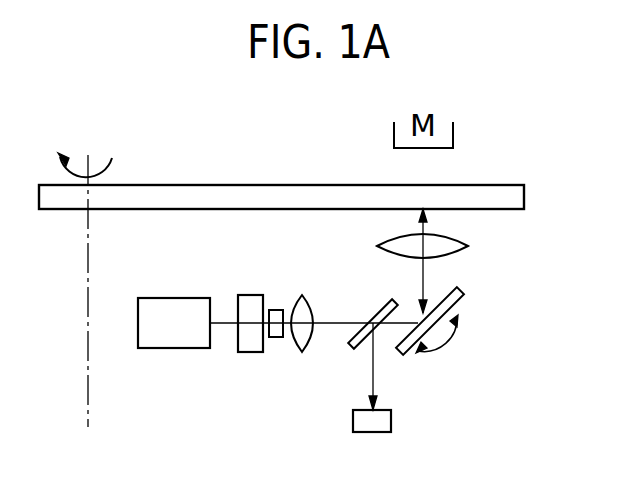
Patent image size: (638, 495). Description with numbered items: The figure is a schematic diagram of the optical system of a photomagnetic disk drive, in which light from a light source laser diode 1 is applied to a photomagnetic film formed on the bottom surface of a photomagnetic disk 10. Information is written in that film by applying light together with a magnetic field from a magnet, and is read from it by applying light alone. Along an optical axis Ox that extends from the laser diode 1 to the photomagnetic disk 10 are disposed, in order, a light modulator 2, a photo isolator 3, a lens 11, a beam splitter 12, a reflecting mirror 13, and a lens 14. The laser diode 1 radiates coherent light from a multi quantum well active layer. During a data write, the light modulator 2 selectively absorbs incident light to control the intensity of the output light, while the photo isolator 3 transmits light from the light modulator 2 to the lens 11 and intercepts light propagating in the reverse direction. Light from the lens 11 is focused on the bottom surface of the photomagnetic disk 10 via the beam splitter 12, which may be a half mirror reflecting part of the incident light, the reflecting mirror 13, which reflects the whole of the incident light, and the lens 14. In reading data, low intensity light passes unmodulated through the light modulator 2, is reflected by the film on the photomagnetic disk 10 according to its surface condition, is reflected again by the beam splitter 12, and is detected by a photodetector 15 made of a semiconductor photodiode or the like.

The laser diode 1 is at (172, 348).
The light modulator 2 is at (251, 352).
The photo isolator 3 is at (276, 310).
The photomagnetic disk 10 is at (524, 196).
The lens 11 is at (310, 345).
The beam splitter 12 is at (368, 305).
The reflecting mirror 13 is at (452, 305).
The lens 14 is at (462, 241).
The photodetector 15 is at (391, 418).
The optical axis Ox is at (423, 272).